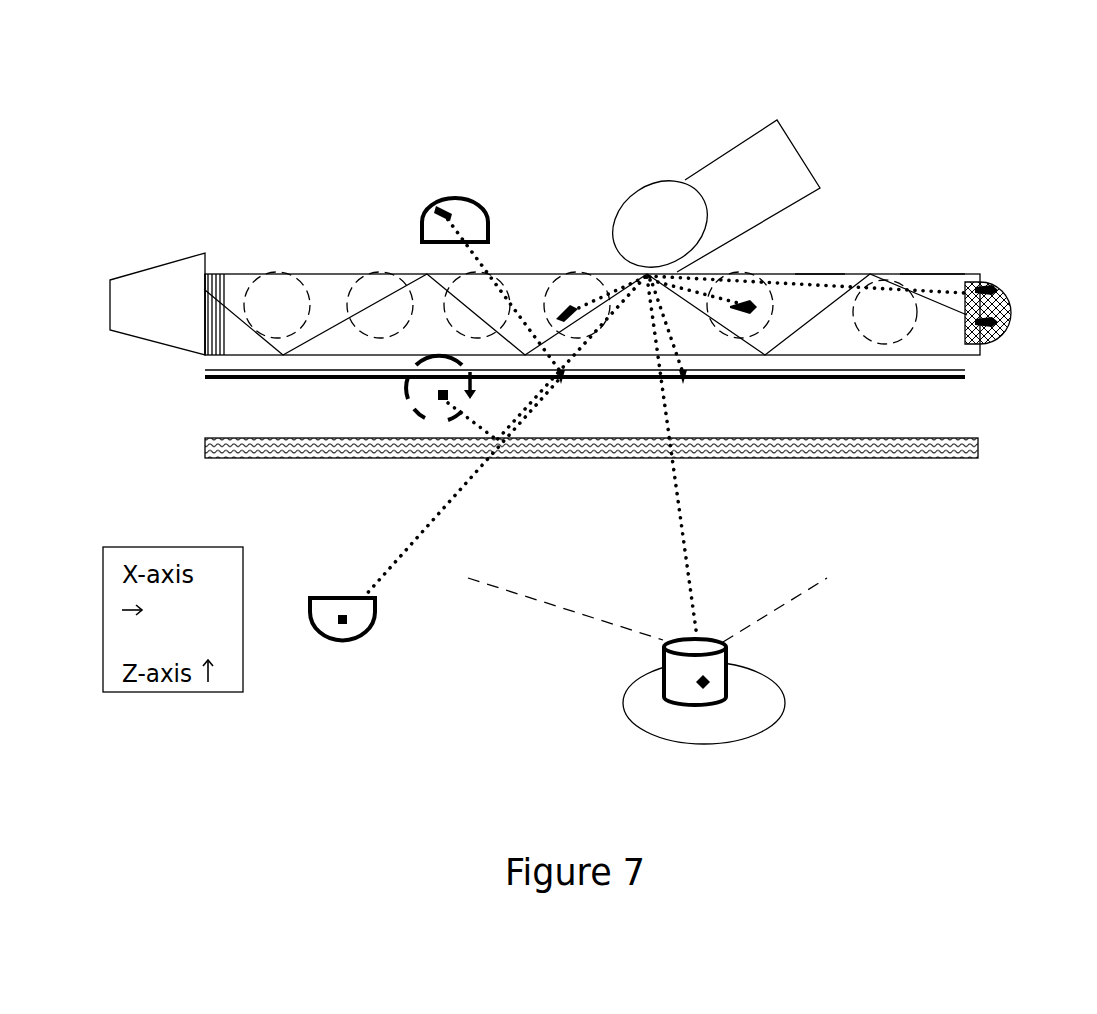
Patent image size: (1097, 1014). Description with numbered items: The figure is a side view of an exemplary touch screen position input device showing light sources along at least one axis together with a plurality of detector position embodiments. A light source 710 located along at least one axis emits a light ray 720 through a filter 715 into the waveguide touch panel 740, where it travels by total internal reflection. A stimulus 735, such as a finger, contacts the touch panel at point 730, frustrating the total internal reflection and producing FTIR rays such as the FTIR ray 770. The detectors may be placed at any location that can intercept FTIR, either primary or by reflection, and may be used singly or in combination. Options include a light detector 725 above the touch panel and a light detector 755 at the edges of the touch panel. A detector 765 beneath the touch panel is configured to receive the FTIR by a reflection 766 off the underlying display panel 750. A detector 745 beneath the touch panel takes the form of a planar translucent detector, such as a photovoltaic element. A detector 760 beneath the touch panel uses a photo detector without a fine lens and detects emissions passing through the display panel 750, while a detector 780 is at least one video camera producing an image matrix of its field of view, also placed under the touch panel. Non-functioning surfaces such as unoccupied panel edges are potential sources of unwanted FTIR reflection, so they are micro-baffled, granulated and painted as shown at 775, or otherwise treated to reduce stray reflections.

The light source 710 is at (145, 260).
The filter 715 is at (215, 270).
The light ray 720 is at (330, 330).
The light detector above the touch panel 725 is at (447, 200).
The contact point 730 is at (655, 272).
The stimulus (finger) 735 is at (707, 160).
The waveguide touch panel 740 is at (930, 272).
The planar translucent detector 745 is at (245, 383).
The display panel 750 is at (245, 458).
The light detector at edges of touch panel 755 is at (385, 338).
The photo detector 760 is at (345, 642).
The detector under the touch panel 765 is at (417, 413).
The reflection 766 is at (475, 394).
The FTIR ray 770 is at (820, 274).
The treated non-functioning surface 775 is at (1011, 317).
The video camera 780 is at (785, 693).